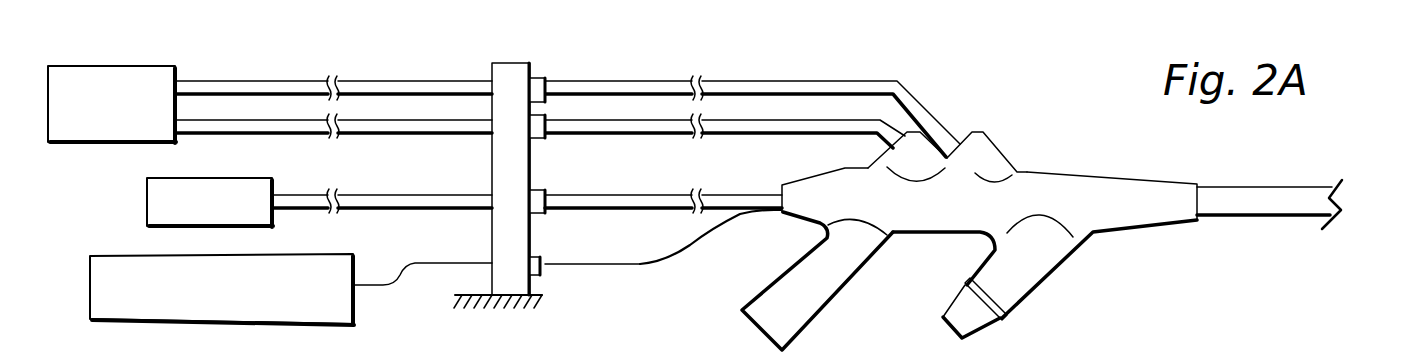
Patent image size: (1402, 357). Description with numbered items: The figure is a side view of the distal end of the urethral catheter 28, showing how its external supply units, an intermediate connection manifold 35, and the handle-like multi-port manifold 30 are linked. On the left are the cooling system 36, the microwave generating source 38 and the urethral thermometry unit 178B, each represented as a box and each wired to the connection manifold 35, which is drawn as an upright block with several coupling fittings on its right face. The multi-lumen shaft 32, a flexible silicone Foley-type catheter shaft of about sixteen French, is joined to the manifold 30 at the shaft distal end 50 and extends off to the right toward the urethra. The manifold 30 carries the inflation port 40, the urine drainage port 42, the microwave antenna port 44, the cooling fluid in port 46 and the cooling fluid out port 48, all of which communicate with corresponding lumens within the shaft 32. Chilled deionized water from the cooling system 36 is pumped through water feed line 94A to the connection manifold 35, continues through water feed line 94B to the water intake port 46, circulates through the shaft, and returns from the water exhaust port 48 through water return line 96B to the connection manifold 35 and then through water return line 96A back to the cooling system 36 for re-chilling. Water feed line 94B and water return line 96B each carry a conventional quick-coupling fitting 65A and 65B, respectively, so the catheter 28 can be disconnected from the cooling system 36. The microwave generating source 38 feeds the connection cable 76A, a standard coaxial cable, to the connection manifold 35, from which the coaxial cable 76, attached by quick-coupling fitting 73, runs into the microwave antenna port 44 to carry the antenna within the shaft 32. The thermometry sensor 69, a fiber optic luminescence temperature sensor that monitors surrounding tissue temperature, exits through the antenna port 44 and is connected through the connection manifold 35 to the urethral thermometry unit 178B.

The catheter 28 is at (1028, 116).
The multi-port manifold 30 is at (1052, 172).
The multi-lumen shaft 32 is at (1277, 193).
The connection manifold 35 is at (503, 62).
The cooling system 36 is at (105, 143).
The microwave generating source 38 is at (147, 213).
The inflation port 40 is at (952, 328).
The urine drainage port 42 is at (752, 325).
The microwave antenna port 44 is at (777, 213).
The cooling fluid in port 46 is at (968, 128).
The cooling fluid out port 48 is at (877, 155).
The shaft distal end 50 is at (1205, 187).
The quick-coupling fitting 65A is at (541, 79).
The quick-coupling fitting 65B is at (548, 112).
The thermometry sensor 69 is at (590, 266).
The quick-coupling fitting 73 is at (547, 213).
The coaxial cable 76 is at (718, 212).
The connection cable 76A is at (465, 210).
The water feed line 94A is at (449, 80).
The water feed line 94B is at (604, 72).
The water return line 96A is at (440, 130).
The water return line 96B is at (603, 130).
The urethral thermometry unit 178B is at (365, 307).